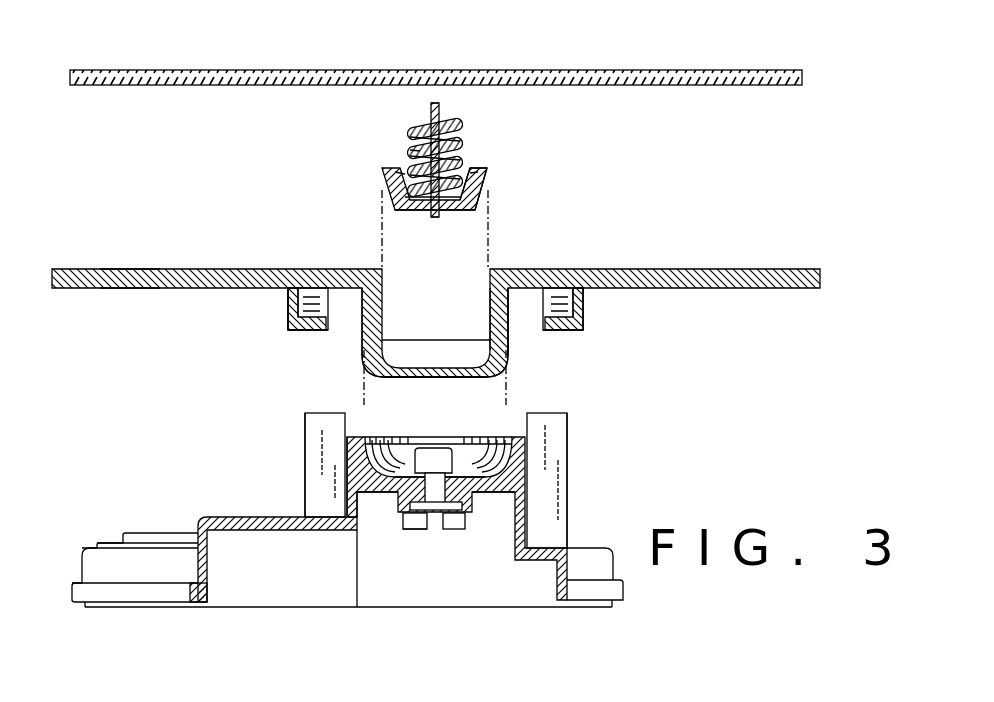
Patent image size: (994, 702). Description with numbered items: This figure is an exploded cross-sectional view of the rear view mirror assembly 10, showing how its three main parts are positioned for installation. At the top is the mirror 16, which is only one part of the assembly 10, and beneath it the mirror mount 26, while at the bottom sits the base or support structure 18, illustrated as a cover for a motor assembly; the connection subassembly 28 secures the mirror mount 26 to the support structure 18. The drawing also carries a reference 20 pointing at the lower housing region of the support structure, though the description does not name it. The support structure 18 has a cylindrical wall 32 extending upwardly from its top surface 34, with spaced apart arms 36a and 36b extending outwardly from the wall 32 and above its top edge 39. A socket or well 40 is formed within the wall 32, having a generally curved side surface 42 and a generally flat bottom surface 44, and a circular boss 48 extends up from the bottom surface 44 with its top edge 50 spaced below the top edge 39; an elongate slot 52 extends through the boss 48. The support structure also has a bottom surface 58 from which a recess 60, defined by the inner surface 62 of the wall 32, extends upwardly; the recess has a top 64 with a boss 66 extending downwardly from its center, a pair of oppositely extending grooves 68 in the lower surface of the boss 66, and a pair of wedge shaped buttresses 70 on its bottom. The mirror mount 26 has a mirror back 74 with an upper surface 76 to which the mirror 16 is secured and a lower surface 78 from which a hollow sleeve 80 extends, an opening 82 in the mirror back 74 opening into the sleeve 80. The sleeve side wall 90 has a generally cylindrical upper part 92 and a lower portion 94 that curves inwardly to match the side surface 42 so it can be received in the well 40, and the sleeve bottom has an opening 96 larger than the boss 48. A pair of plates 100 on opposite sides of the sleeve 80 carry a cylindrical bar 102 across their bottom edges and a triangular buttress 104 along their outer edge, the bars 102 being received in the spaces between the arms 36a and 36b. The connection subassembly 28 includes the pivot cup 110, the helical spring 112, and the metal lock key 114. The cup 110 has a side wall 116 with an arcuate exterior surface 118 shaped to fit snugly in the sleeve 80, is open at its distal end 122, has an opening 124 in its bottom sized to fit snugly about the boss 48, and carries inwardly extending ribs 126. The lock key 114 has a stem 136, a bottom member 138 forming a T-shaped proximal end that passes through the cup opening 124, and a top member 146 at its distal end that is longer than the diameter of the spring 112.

The mirror assembly 10 is at (773, 183).
The mirror 16 is at (686, 70).
The support structure 18 is at (594, 470).
The housing 20 is at (208, 503).
The mirror mount 26 is at (765, 245).
The connection subassembly 28 is at (585, 124).
The cylindrical wall 32 is at (527, 455).
The top surface 34 is at (290, 516).
The arm 36a is at (545, 470).
The arm 36b is at (324, 427).
The top edge of the wall 39 is at (518, 412).
The socket 40 is at (416, 402).
The side surface 42 is at (360, 436).
The bottom surface 44 is at (372, 492).
The circular boss 48 is at (474, 440).
The top edge of the boss 50 is at (447, 447).
The elongate slot 52 is at (437, 500).
The bottom surface 58 is at (255, 549).
The recess 60 is at (502, 516).
The inner surface 62 is at (375, 495).
The top of the recess 64 is at (487, 492).
The boss 66 is at (398, 492).
The grooves 68 is at (425, 515).
The wedge shaped buttresses 70 is at (460, 521).
The mirror back 74 is at (50, 259).
The upper surface 76 is at (128, 269).
The lower surface 78 is at (128, 288).
The hollow sleeve 80 is at (355, 331).
The opening 82 is at (490, 268).
The side wall 90 is at (518, 325).
The upper part 92 is at (550, 296).
The lower portion 94 is at (492, 370).
The opening 96 is at (416, 366).
The plates 100 is at (310, 300).
The cylindrical bar 102 is at (298, 329).
The triangular buttress 104 is at (290, 306).
The pivot cup 110 is at (516, 184).
The helical spring 112 is at (465, 130).
The lock key 114 is at (441, 110).
The side wall 116 is at (501, 193).
The exterior surface 118 is at (384, 180).
The distal end 122 is at (488, 178).
The opening 124 is at (445, 210).
The ribs 126 is at (395, 172).
The stem 136 is at (410, 150).
The bottom member 138 is at (436, 218).
The top member 146 is at (428, 108).